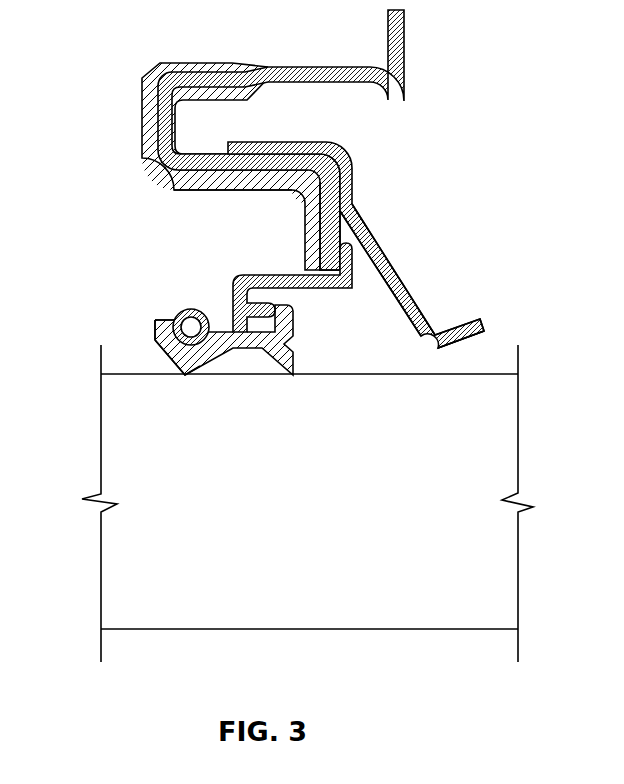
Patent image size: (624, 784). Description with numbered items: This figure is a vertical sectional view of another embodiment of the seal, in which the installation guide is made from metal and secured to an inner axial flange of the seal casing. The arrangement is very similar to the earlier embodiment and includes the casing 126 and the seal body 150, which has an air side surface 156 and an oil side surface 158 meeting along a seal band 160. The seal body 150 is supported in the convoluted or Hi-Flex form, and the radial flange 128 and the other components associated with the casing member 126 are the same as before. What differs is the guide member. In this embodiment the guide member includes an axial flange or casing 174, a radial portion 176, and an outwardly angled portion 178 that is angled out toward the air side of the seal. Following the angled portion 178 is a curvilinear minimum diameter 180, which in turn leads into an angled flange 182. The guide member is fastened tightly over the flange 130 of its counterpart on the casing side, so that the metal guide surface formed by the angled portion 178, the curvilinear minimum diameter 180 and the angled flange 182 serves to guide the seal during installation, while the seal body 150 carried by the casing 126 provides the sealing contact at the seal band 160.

The casing 126 is at (325, 218).
The axial flange or casing 174 is at (293, 147).
The radial portion 176 is at (348, 190).
The outwardly angled portion 178 is at (380, 267).
The curvilinear minimum diameter 180 is at (433, 347).
The angled flange 182 is at (455, 350).
The radial flange 128 is at (330, 250).
The flange 130 is at (207, 162).
The seal body 150 is at (197, 347).
The air side surface 156 is at (220, 363).
The oil side surface 158 is at (162, 353).
The seal band 160 is at (182, 375).